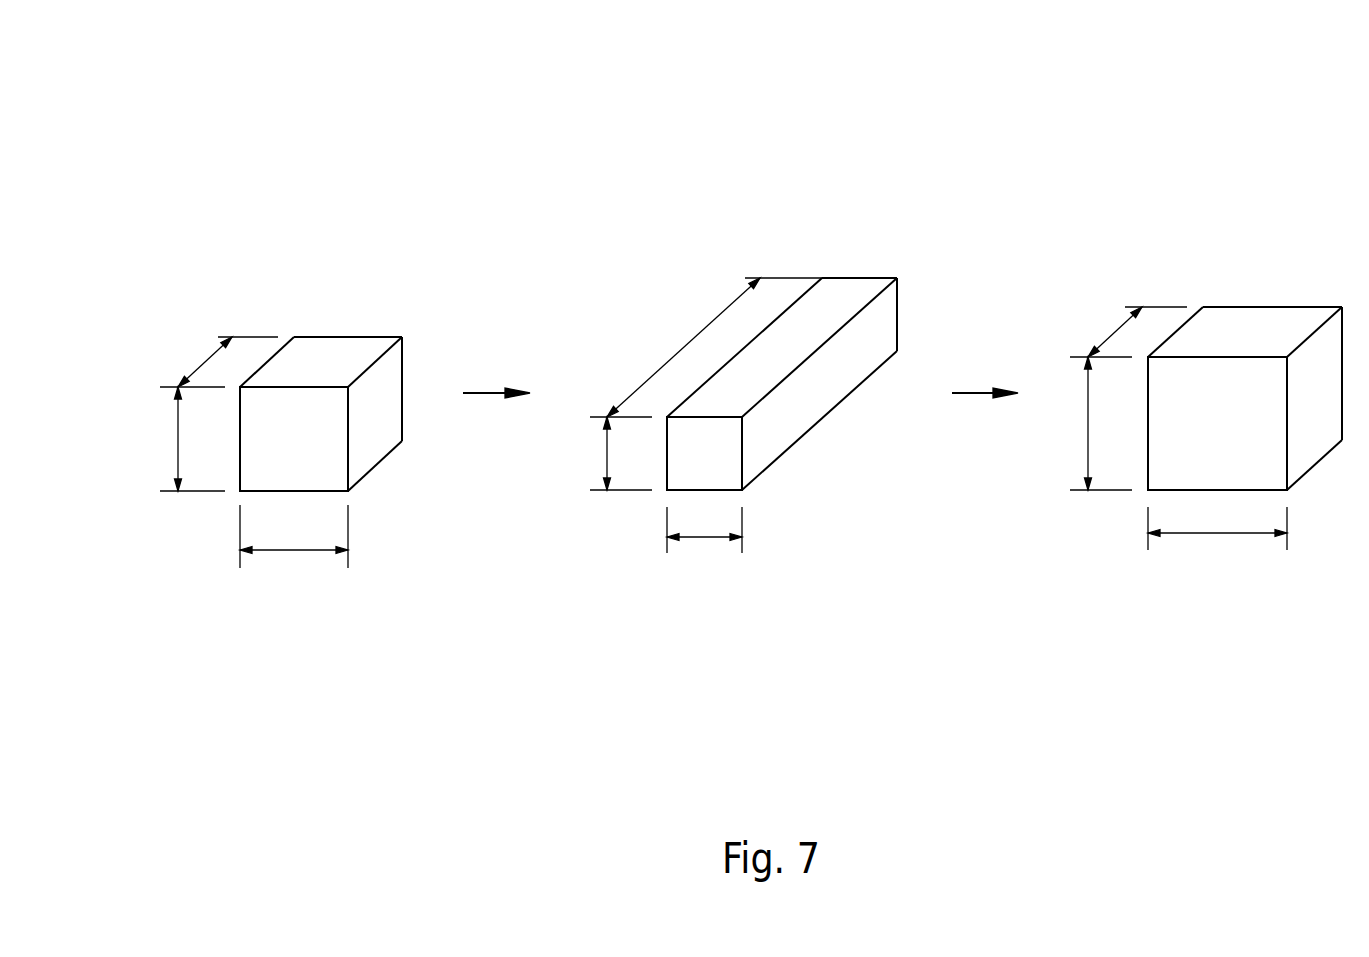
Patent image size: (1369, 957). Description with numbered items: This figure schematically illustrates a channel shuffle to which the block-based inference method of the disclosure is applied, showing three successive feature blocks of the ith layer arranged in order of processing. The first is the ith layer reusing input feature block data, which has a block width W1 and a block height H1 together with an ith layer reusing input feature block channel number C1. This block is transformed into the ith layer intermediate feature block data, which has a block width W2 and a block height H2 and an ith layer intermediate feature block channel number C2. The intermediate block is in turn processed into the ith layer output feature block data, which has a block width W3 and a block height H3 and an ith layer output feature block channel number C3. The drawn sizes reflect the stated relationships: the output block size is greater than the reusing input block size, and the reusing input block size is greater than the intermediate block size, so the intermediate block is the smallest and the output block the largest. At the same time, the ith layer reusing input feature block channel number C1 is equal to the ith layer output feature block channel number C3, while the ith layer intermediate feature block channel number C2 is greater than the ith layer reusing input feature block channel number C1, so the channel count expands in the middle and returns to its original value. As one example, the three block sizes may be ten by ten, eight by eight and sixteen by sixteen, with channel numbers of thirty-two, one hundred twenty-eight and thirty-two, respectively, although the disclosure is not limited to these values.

The ith layer reusing input feature block channel number C1 is at (214, 359).
The block height H1 is at (176, 439).
The block width W1 is at (294, 536).
The ith layer intermediate feature block channel number C2 is at (714, 347).
The block height H2 is at (602, 453).
The block width W2 is at (704, 527).
The ith layer output feature block channel number C3 is at (1123, 329).
The block height H3 is at (1084, 423).
The block width W3 is at (1217, 523).